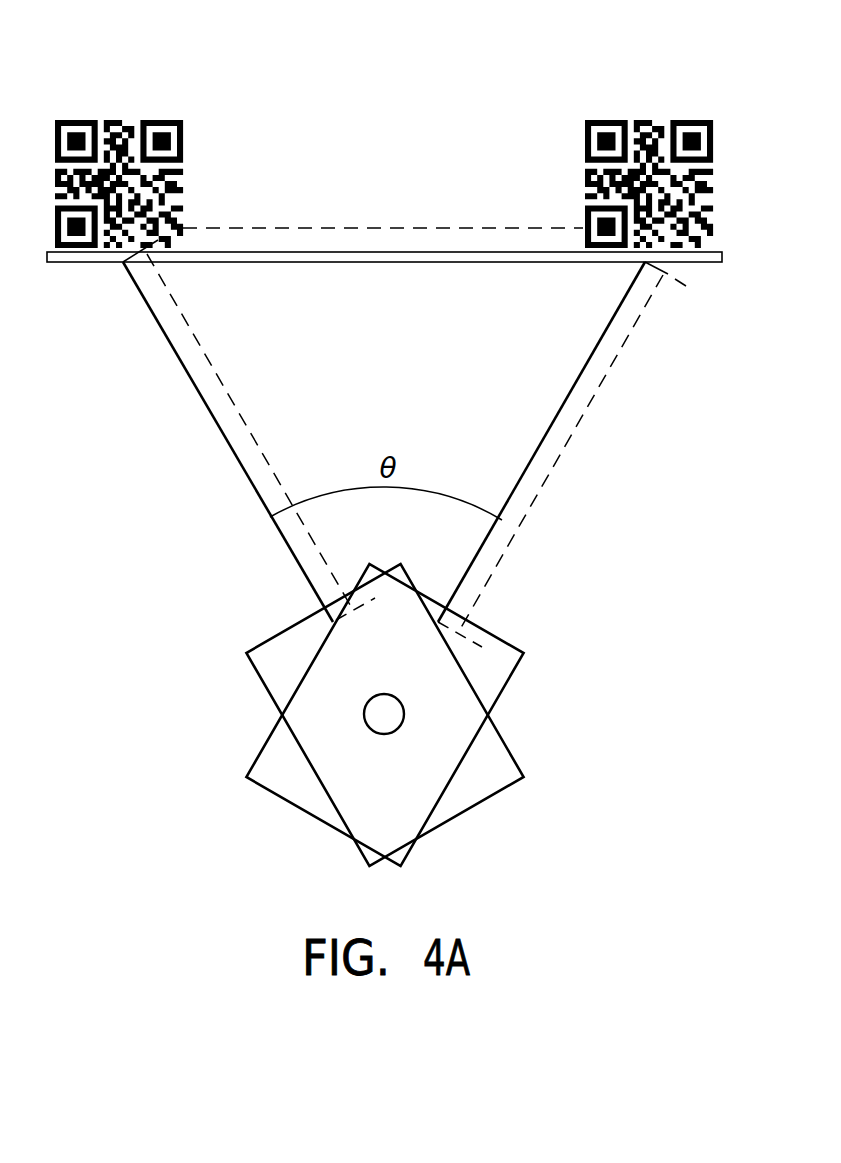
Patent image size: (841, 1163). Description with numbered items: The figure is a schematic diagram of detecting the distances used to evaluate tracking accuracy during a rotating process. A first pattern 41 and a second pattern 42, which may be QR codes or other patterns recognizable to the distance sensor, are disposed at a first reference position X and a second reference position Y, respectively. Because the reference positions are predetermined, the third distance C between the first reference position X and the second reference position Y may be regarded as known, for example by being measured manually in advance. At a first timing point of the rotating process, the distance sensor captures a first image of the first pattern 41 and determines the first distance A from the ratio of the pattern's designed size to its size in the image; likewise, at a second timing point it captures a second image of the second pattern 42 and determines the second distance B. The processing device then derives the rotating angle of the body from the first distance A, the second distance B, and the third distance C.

The first pattern 41 is at (118, 118).
The second pattern 42 is at (648, 118).
The first distance A is at (261, 437).
The second distance B is at (550, 461).
The third distance C is at (383, 211).
The first reference position X is at (130, 268).
The second reference position Y is at (648, 279).